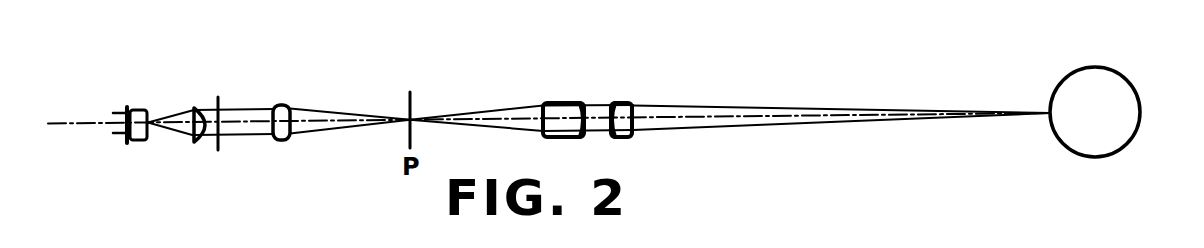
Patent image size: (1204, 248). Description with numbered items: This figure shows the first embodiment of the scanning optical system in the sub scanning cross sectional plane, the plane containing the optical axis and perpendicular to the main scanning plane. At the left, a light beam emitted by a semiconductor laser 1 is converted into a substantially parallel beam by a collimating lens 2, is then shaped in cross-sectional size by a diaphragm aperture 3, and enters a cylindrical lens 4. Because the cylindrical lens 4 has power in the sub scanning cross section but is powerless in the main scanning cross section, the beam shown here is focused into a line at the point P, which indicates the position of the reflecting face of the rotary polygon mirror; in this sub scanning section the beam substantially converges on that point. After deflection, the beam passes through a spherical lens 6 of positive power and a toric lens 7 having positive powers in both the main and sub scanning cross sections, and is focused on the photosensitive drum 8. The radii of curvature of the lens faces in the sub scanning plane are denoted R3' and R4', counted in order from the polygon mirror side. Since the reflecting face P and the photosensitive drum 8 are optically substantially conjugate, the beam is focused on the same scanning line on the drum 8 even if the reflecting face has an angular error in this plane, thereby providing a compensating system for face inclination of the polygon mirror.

The semiconductor laser 1 is at (138, 108).
The collimating lens 2 is at (200, 106).
The diaphragm aperture 3 is at (222, 100).
The cylindrical lens 4 is at (284, 107).
The spherical lens 6 is at (543, 105).
The radius of curvature of third lens face in sub scanning plane R3' is at (555, 82).
The toric lens 7 is at (622, 100).
The radius of curvature of fourth lens face in sub scanning plane R4' is at (656, 83).
The photosensitive drum 8 is at (1117, 98).